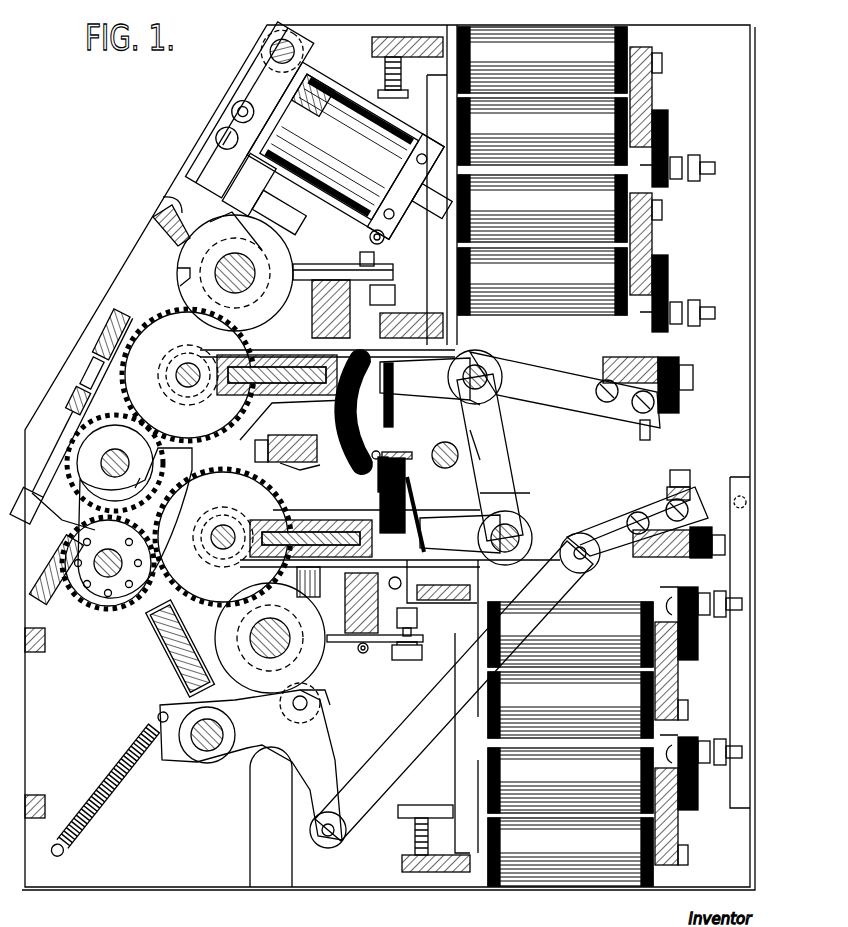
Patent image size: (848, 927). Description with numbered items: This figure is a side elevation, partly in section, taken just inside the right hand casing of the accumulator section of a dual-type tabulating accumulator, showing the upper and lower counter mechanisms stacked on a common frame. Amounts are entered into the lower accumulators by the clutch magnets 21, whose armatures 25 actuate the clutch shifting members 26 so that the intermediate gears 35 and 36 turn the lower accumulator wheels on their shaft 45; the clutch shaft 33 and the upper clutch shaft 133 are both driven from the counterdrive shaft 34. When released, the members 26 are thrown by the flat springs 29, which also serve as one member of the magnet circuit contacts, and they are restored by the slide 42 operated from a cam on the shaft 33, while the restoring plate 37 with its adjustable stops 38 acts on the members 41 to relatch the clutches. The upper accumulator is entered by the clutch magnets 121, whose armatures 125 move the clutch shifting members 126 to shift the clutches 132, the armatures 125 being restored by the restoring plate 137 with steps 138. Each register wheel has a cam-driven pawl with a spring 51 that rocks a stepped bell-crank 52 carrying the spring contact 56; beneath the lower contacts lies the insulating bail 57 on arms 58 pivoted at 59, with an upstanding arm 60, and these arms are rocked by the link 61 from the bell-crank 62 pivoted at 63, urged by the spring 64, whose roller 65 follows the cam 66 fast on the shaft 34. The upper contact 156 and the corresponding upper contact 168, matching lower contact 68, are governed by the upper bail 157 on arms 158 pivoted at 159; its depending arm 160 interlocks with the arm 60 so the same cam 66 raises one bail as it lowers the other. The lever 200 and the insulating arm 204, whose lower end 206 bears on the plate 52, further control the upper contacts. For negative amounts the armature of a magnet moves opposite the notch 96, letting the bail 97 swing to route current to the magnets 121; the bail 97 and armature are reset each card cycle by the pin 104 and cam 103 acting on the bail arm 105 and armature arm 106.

The clutch magnet 21 is at (615, 736).
The armature 25 is at (455, 790).
The clutch shifting member 26 is at (391, 507).
The flat spring 29 is at (598, 550).
The clutch shaft 33 is at (218, 538).
The counterdrive shaft 34 is at (335, 642).
The intermediate gear 35 is at (223, 537).
The intermediate gear 36 is at (112, 608).
The restoring plate 37 is at (370, 652).
The adjustable stop 38 is at (420, 652).
The member 41 is at (418, 620).
The slide 42 is at (323, 520).
The shaft 45 is at (88, 608).
The spring 51 is at (172, 668).
The bell-crank 52 is at (342, 588).
The spring contact 56 is at (422, 500).
The bail 57 is at (412, 490).
The arm 58 is at (460, 534).
The pivot 59 is at (507, 555).
The upstanding arm 60 is at (510, 476).
The link 61 is at (446, 688).
The bell-crank 62 is at (325, 757).
The pivot 63 is at (205, 752).
The spring 64 is at (122, 796).
The roller 65 is at (320, 700).
The cam 66 is at (248, 590).
The contact 68 is at (504, 505).
The notch 96 is at (262, 204).
The bail 97 is at (226, 195).
The cam 103 is at (177, 268).
The pin 104 is at (227, 231).
The bail arm 105 is at (163, 197).
The armature arm 106 is at (327, 284).
The clutch magnet 121 is at (586, 179).
The armature 125 is at (384, 238).
The clutch shifting member 126 is at (240, 348).
The clutch 132 is at (175, 362).
The clutch shaft 133 is at (188, 385).
The restoring plate 137 is at (376, 262).
The step 138 is at (389, 285).
The spring contact 156 is at (437, 448).
The bail 157 is at (392, 442).
The arm 158 is at (425, 392).
The pivot 159 is at (490, 358).
The depending arm 160 is at (497, 440).
The upper contact 168 is at (475, 412).
The lever 200 is at (313, 426).
The arm 204 is at (308, 462).
The lower end 206 is at (345, 478).